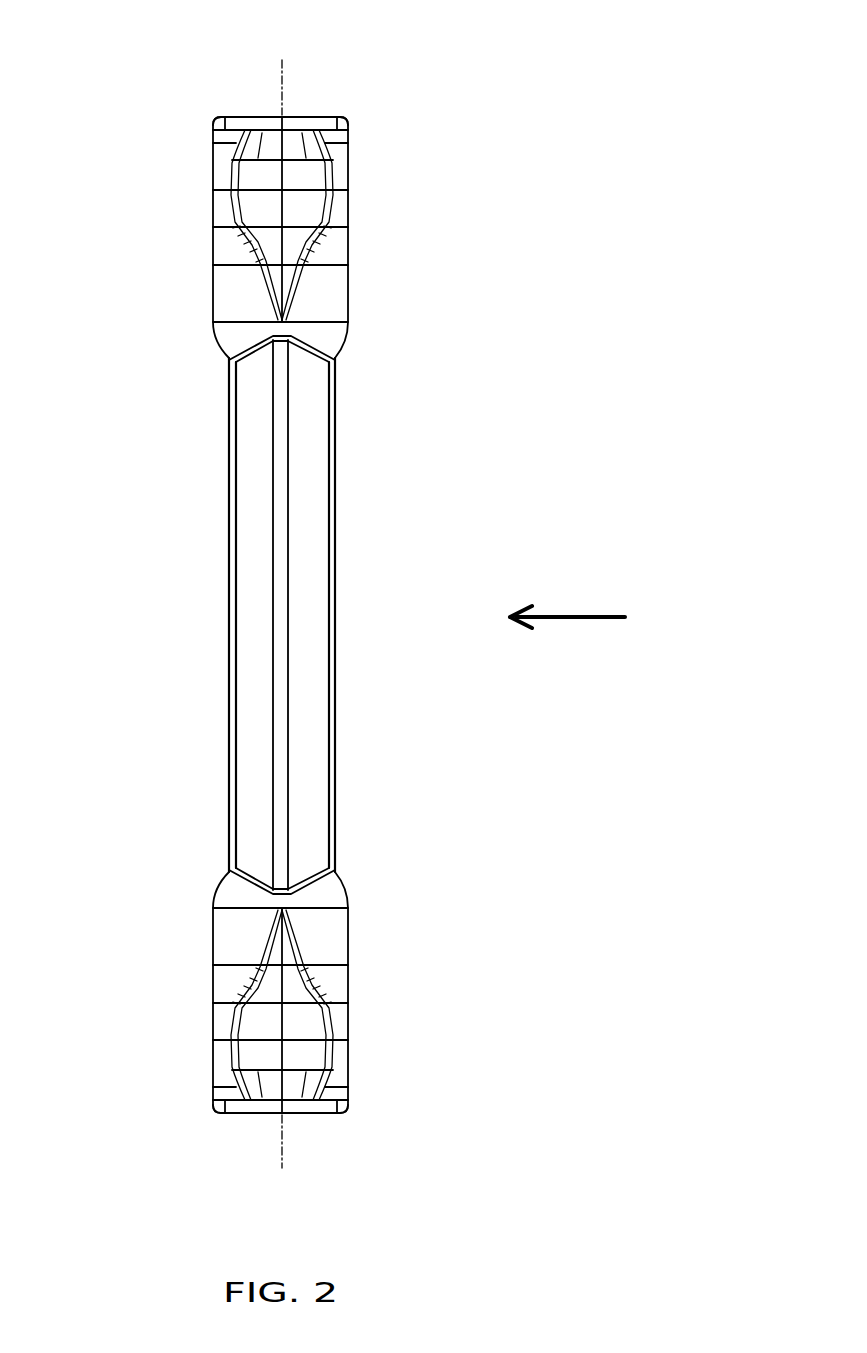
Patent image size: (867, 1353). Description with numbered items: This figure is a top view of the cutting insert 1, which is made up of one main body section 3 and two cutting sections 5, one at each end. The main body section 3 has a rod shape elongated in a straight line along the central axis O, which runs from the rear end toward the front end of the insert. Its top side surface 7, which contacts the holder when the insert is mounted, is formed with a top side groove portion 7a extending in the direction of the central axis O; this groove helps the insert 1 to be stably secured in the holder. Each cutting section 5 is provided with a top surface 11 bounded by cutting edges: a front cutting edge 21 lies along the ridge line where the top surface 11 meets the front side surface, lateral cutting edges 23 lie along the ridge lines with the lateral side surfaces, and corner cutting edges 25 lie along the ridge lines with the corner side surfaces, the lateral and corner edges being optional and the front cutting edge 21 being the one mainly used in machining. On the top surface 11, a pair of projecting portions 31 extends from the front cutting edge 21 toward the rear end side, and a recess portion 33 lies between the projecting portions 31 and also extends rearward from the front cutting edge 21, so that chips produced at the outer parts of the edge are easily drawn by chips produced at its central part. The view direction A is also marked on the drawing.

The insert 1 is at (183, 438).
The main body section 3 is at (274, 615).
The cutting section 5 is at (348, 292).
The top side surface 7 is at (228, 588).
The top side groove portion 7a is at (306, 595).
The top surface 11 is at (286, 607).
The projecting portion 31 is at (240, 135).
The recess portion 33 is at (260, 173).
The front cutting edge 21 is at (290, 118).
The lateral cutting edge 23 is at (213, 133).
The corner cutting edge 25 is at (217, 117).
The central axis O is at (283, 612).
The direction of view A is at (567, 601).